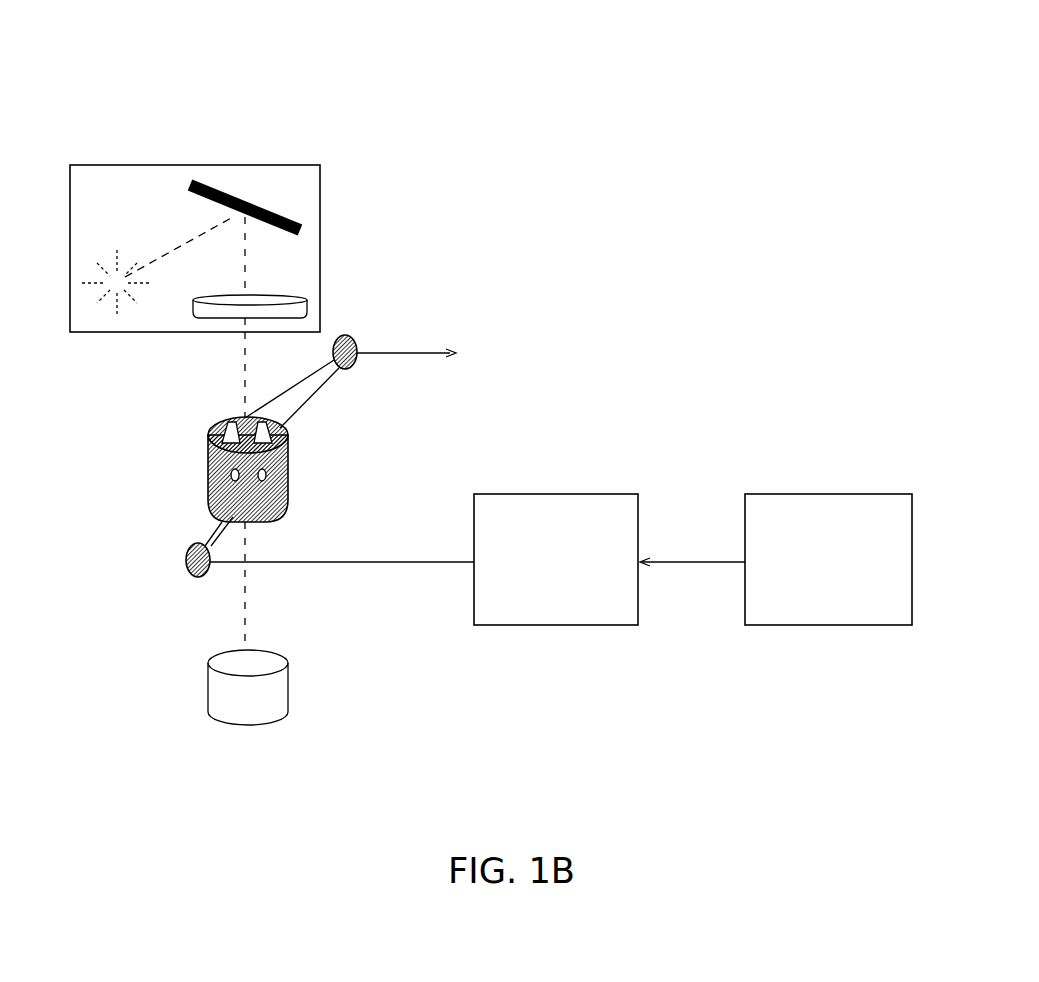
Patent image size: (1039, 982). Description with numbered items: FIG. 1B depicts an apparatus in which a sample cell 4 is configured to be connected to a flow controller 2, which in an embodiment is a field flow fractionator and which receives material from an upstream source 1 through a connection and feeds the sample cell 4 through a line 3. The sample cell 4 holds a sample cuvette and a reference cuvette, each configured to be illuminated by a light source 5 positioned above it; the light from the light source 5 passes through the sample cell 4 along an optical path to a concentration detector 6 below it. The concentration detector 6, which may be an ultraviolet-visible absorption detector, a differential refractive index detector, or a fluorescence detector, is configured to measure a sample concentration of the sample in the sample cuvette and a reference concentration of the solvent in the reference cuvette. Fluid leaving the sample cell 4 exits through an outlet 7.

The gas supply source 1 is at (828, 559).
The flow controller 2 is at (700, 728).
The gas supply line 3 is at (342, 534).
The sample cell 4 is at (790, 332).
The light source 5 is at (190, 70).
The concentration detector 6 is at (202, 788).
The gas outlet 7 is at (427, 347).